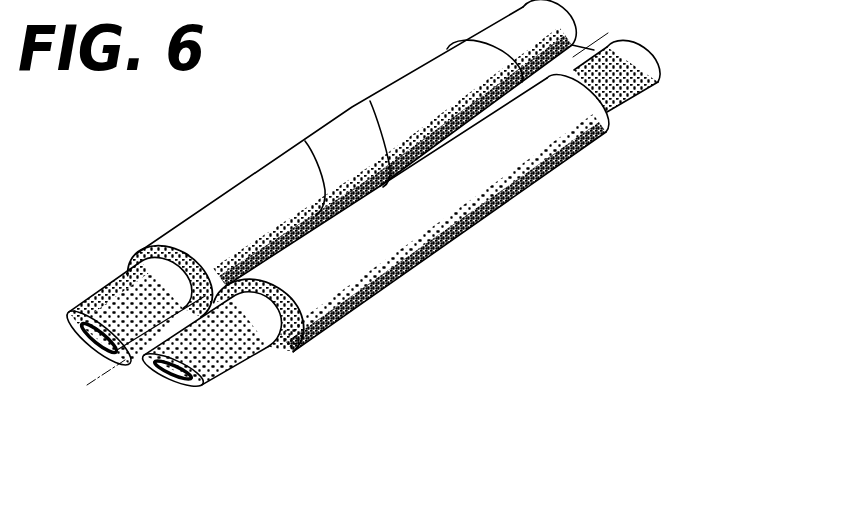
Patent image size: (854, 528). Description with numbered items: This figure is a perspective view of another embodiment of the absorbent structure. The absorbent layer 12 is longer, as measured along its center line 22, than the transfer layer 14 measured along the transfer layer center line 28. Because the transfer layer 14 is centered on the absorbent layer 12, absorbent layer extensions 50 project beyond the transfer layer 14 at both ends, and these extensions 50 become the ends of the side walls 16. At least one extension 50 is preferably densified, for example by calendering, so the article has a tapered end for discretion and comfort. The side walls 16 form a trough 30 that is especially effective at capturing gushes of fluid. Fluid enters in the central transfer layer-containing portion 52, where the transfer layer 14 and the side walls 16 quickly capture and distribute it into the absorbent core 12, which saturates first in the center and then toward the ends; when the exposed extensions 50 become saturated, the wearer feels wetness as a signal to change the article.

The absorbent layer 12 is at (198, 355).
The transfer layer 14 is at (480, 187).
The side walls 16 is at (243, 225).
The center line 22 is at (108, 372).
The transfer layer center line 28 is at (370, 101).
The trough 30 is at (438, 120).
The absorbent layer extensions 50 is at (616, 72).
The central transfer layer-containing portion 52 is at (305, 141).